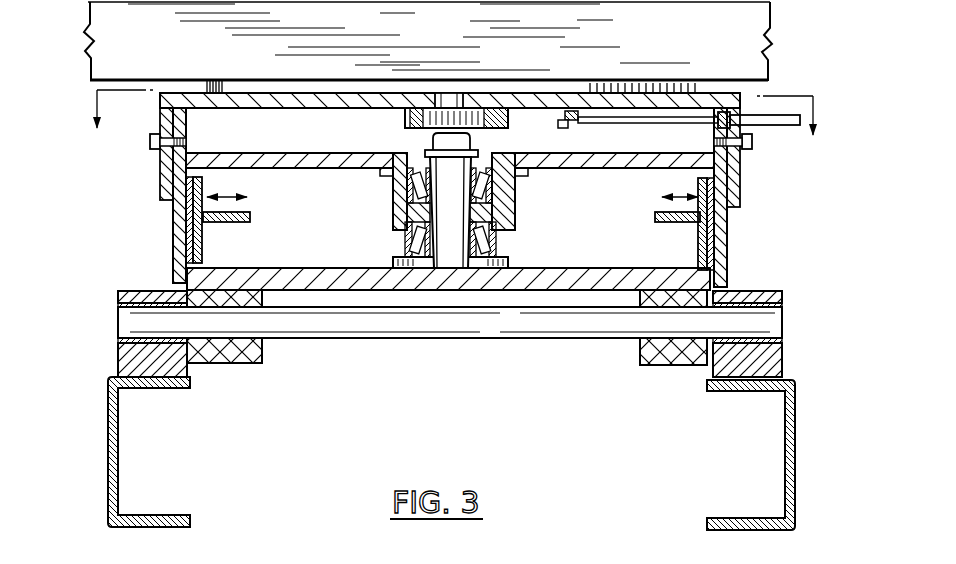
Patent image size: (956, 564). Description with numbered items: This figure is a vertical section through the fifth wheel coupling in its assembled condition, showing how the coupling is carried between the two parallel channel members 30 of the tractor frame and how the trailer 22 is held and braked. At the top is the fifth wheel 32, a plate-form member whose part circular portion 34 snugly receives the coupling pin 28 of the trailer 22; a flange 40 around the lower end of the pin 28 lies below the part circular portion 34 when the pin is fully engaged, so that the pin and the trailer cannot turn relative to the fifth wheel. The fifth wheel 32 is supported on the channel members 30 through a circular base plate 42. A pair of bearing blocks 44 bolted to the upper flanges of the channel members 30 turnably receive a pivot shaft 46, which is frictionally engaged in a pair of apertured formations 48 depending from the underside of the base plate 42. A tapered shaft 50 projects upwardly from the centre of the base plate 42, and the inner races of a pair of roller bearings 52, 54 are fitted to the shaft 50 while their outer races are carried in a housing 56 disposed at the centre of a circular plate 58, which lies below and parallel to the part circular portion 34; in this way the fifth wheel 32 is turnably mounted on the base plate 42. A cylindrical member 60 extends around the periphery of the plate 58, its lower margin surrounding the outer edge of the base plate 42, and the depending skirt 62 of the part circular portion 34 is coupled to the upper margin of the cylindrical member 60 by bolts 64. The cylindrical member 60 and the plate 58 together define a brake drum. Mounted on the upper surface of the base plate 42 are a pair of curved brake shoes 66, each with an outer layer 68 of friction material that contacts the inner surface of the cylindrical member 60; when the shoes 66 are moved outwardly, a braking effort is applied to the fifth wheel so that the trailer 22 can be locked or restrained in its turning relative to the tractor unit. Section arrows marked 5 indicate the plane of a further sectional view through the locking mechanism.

The trailer 22 is at (747, 28).
The coupling pin 28 is at (450, 100).
The fifth wheel 32 is at (529, 97).
The part circular portion 34 is at (591, 103).
The flange 40 is at (404, 123).
The circular plate 58 is at (645, 160).
The depending skirt 62 is at (161, 191).
The cylindrical member 60 is at (728, 227).
The bolts 64 is at (150, 143).
The section line 5- 5 is at (456, 133).
The outer layer of friction material 68 is at (190, 223).
The brake shoes 66 is at (249, 212).
The housing 56 is at (395, 203).
The roller bearing 54 is at (497, 176).
The roller bearing 52 is at (498, 248).
The tapered shaft 50 is at (436, 227).
The circular base plate 42 is at (277, 268).
The apertured formations 48 is at (262, 352).
The pivot shaft 46 is at (437, 328).
The bearing blocks 44 is at (117, 362).
The channel members 30 is at (107, 463).